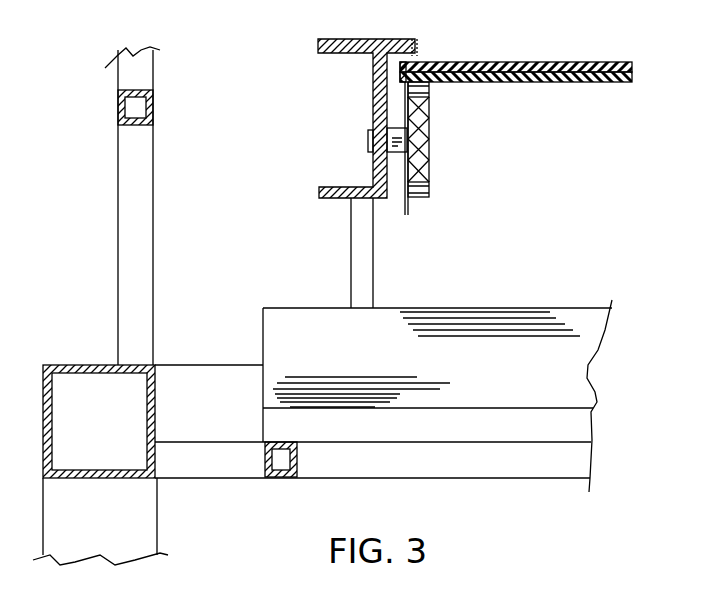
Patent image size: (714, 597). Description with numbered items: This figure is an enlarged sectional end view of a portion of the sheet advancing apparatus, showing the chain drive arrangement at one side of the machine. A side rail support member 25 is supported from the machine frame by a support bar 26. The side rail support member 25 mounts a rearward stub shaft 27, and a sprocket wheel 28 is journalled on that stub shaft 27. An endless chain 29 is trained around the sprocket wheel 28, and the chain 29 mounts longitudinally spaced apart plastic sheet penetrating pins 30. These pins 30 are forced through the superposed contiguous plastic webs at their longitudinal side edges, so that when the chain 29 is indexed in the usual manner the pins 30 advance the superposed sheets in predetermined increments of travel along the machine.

The side rail support member 25 is at (320, 190).
The support bar 26 is at (374, 272).
The stub shaft 27 is at (390, 127).
The sprocket wheel 28 is at (432, 168).
The endless chain 29 is at (432, 88).
The plastic sheet penetrating pin 30 is at (405, 62).